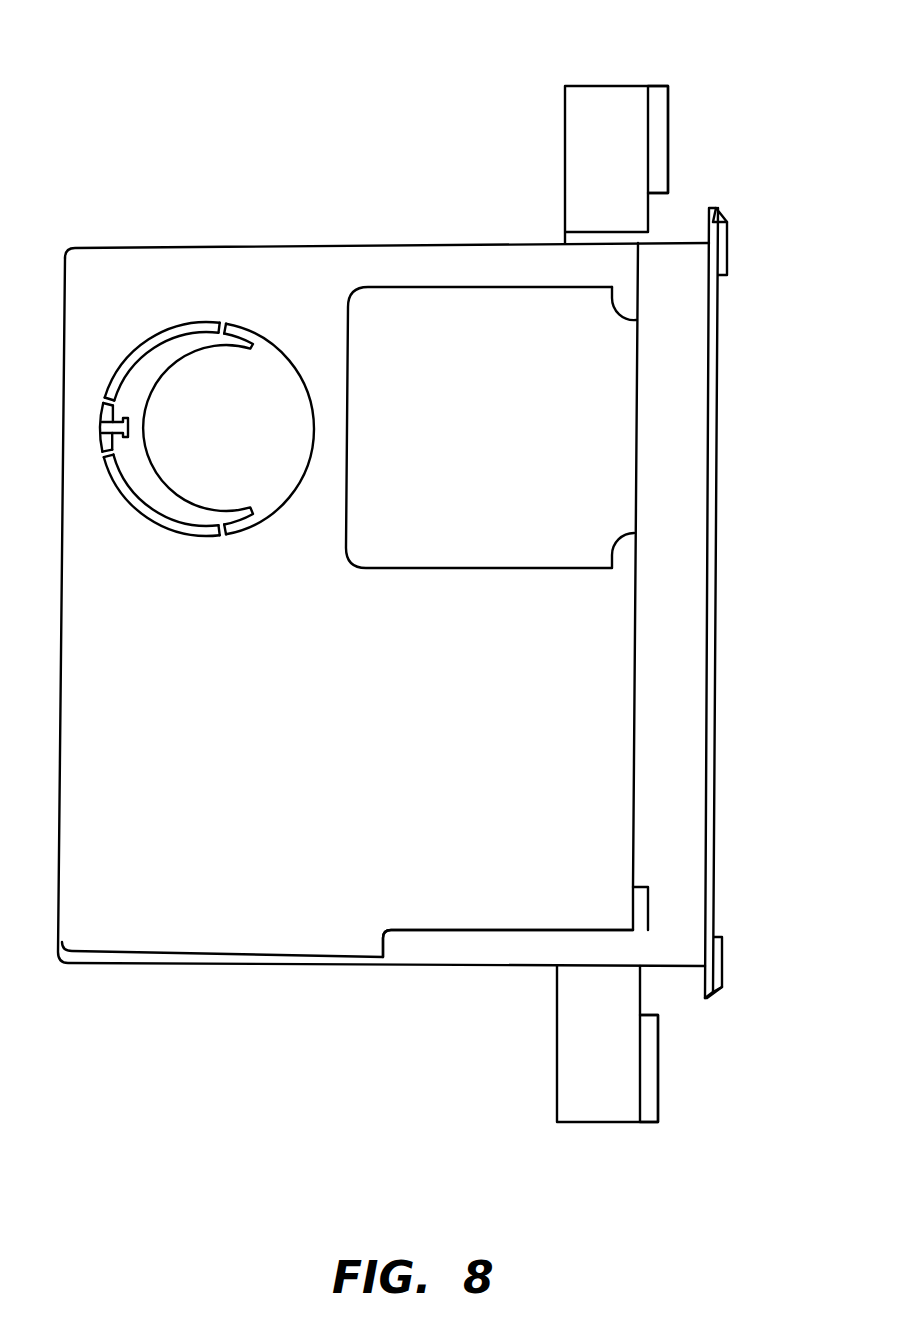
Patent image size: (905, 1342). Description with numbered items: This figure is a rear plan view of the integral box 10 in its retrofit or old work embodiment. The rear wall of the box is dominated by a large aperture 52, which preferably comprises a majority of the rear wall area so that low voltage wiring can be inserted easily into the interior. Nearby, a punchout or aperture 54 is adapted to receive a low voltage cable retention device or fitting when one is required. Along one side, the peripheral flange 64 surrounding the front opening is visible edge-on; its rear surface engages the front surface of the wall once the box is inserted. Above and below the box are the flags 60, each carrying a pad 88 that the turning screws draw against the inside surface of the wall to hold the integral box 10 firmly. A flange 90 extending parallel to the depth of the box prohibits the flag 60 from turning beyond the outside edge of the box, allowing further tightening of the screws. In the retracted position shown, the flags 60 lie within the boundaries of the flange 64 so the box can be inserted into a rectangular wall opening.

The integral box 10 is at (292, 1072).
The aperture 52 is at (455, 315).
The punchouts or apertures 54 is at (228, 400).
The flags 60 is at (714, 54).
The peripheral flange 64 is at (727, 248).
The pads 88 is at (655, 137).
The flanges 90 is at (540, 938).